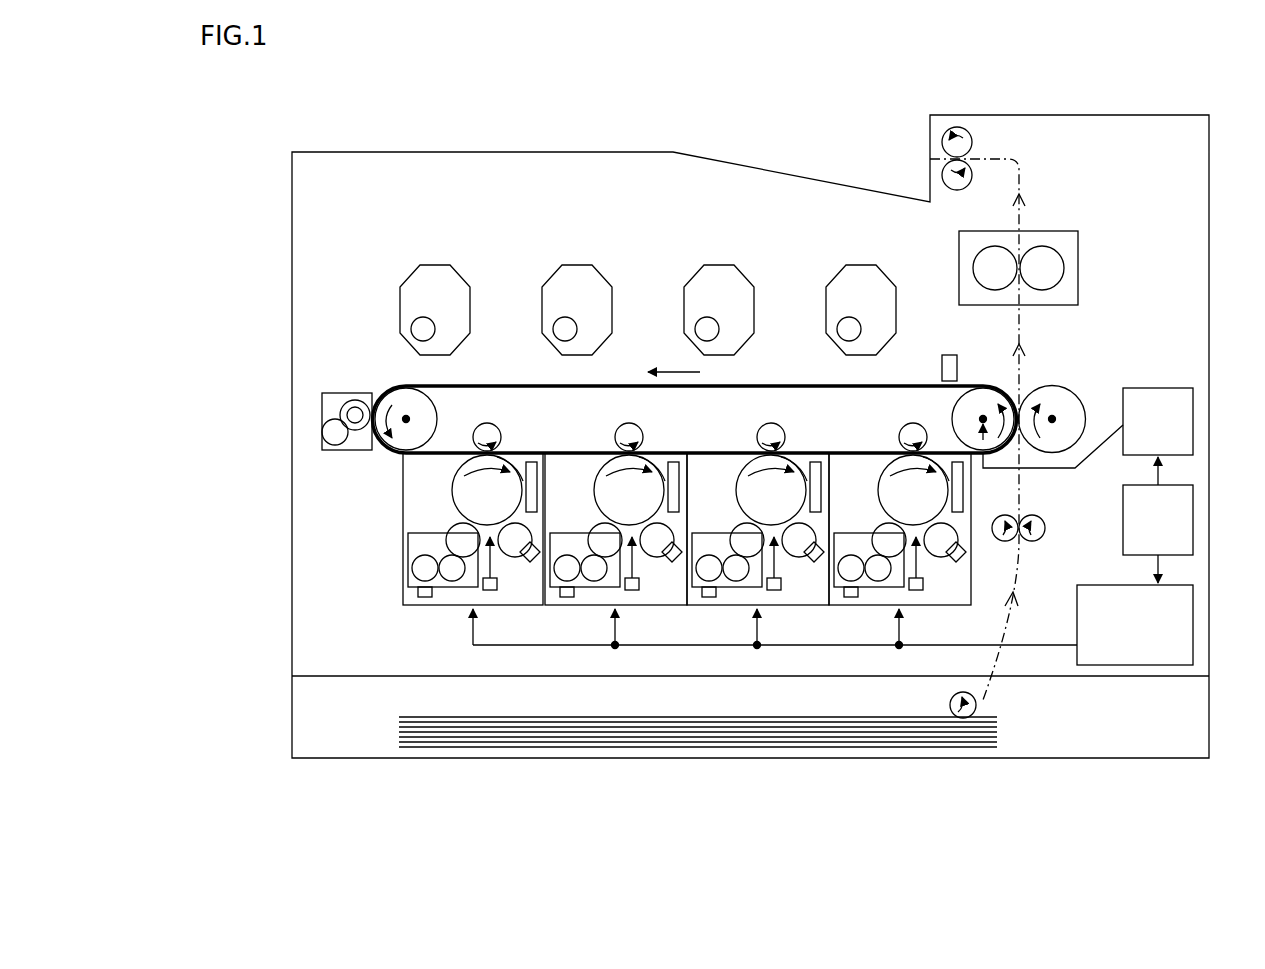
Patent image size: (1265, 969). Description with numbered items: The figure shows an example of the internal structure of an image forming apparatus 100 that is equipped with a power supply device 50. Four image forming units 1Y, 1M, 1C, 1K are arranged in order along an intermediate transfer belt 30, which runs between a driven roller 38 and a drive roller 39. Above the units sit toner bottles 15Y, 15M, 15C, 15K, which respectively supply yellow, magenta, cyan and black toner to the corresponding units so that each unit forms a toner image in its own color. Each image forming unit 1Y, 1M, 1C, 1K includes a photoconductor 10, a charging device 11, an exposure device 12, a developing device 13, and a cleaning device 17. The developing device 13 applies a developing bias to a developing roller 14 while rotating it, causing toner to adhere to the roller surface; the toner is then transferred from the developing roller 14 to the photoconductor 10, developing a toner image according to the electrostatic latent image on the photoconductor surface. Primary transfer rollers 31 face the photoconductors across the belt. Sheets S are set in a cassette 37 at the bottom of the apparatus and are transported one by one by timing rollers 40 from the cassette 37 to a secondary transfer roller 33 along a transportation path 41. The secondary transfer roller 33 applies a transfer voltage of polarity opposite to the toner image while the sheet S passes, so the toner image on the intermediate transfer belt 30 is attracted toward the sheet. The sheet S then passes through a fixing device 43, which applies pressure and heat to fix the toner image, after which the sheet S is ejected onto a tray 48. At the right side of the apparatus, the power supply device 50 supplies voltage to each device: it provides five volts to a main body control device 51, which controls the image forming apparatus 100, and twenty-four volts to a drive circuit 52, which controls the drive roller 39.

The image forming apparatus 100 is at (1124, 92).
The tray 48 is at (777, 174).
The fixing device 43 is at (1052, 231).
The transportation path 41 is at (1023, 496).
The timing rollers 40 is at (1046, 528).
The toner bottle 15Y is at (433, 265).
The toner bottle 15M is at (575, 265).
The toner bottle 15C is at (717, 265).
The toner bottle 15K is at (859, 265).
The intermediate transfer belt 30 is at (494, 383).
The driven roller 38 is at (404, 392).
The drive roller 39 is at (984, 393).
The secondary transfer roller 33 is at (1056, 391).
The drive circuit 52 is at (1193, 422).
The power supply device 50 is at (1193, 492).
The main body control device 51 is at (1193, 603).
The image forming unit 1Y is at (411, 607).
The image forming unit 1M is at (563, 607).
The image forming unit 1C is at (705, 607).
The image forming unit 1K is at (847, 607).
The photoconductor 10 is at (462, 480).
The primary transfer rollers 31 is at (488, 423).
The cleaning device 17 is at (531, 462).
The charging device 11 is at (511, 551).
The developing roller 14 is at (470, 553).
The developing device 13 is at (419, 533).
The exposure device 12 is at (491, 592).
The cassette 37 is at (310, 713).
The sheet S is at (399, 728).